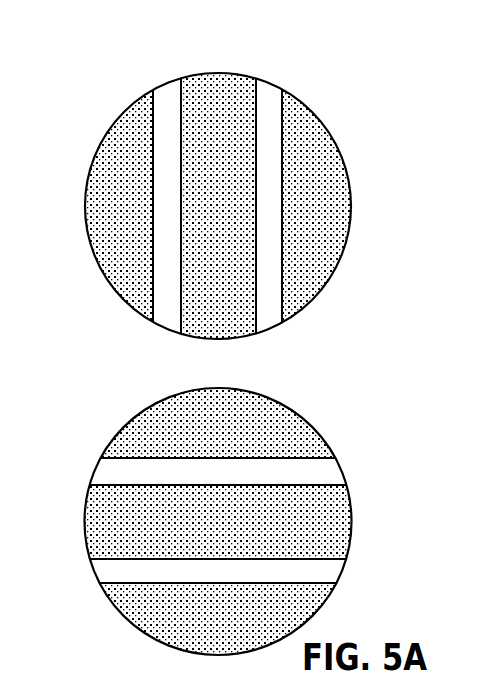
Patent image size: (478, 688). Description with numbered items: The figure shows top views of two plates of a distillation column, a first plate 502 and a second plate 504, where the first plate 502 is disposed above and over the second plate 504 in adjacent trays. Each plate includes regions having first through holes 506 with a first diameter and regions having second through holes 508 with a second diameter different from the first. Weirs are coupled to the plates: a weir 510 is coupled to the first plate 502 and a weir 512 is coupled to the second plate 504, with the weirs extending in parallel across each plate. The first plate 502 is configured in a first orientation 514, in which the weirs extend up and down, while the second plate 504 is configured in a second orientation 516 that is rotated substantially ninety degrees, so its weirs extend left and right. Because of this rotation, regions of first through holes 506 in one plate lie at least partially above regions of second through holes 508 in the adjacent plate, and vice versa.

The first plate 502 is at (100, 50).
The second plate 504 is at (100, 403).
The first through holes 506 is at (118, 178).
The second through holes 508 is at (272, 148).
The weir 510 is at (182, 100).
The weir 512 is at (322, 486).
The first orientation 514 is at (323, 37).
The second orientation 516 is at (356, 384).